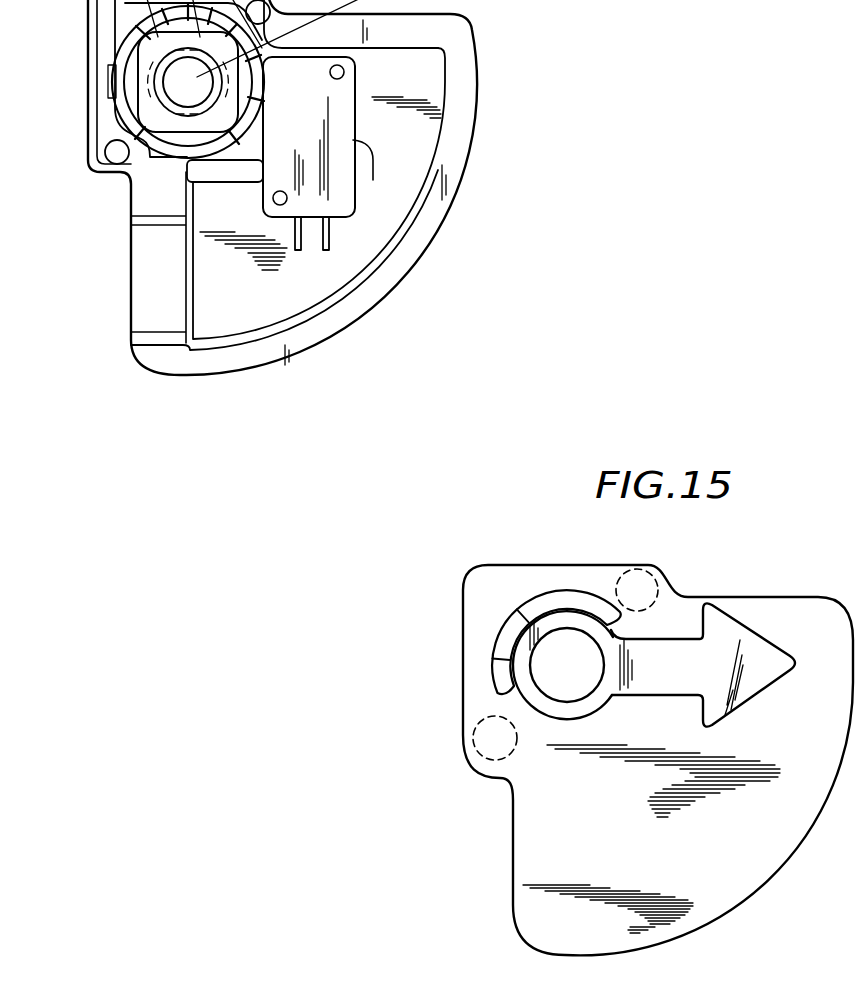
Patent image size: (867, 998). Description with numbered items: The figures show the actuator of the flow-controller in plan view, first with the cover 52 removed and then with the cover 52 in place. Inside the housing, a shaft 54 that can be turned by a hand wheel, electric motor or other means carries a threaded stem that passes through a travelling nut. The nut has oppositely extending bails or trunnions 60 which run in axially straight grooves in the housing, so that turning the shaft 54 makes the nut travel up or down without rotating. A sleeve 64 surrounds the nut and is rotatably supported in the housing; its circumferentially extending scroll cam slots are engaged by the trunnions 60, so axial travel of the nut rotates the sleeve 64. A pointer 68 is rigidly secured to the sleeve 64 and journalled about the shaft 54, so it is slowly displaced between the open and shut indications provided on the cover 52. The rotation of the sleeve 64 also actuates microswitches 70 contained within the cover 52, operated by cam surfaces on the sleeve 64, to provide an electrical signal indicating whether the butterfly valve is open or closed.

In FIG. 14, the bails or trunnions 60 is at (180, 128).
In FIG. 14, the sleeve 64 is at (130, 88).
In FIG. 14, the microswitches 70 is at (344, 125).
In FIG. 15, the cover 52 is at (525, 828).
In FIG. 15, the shaft 54 is at (568, 643).
In FIG. 15, the pointer 68 is at (735, 630).